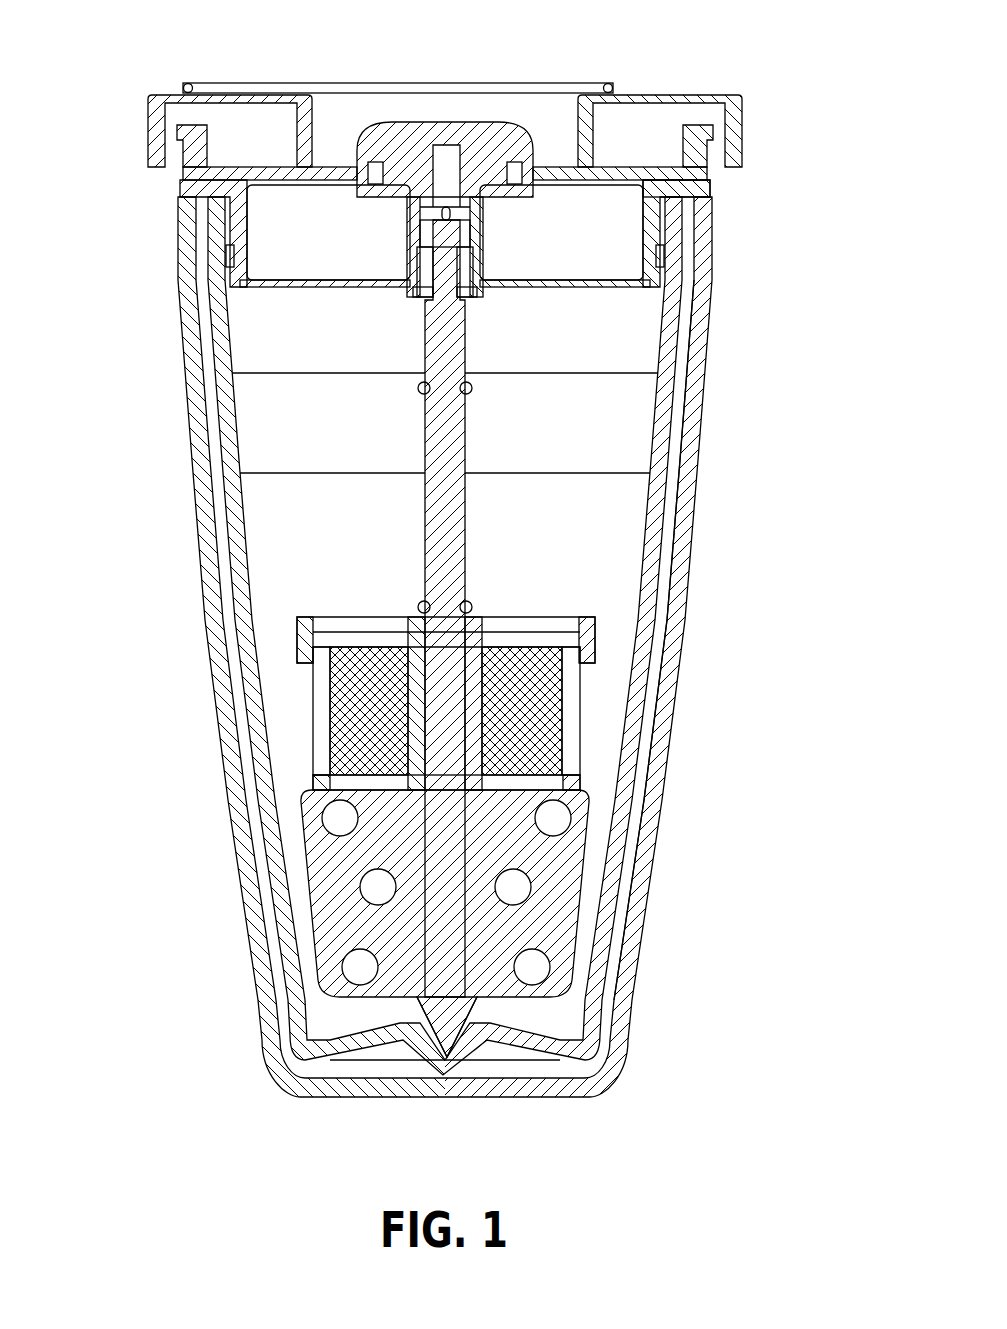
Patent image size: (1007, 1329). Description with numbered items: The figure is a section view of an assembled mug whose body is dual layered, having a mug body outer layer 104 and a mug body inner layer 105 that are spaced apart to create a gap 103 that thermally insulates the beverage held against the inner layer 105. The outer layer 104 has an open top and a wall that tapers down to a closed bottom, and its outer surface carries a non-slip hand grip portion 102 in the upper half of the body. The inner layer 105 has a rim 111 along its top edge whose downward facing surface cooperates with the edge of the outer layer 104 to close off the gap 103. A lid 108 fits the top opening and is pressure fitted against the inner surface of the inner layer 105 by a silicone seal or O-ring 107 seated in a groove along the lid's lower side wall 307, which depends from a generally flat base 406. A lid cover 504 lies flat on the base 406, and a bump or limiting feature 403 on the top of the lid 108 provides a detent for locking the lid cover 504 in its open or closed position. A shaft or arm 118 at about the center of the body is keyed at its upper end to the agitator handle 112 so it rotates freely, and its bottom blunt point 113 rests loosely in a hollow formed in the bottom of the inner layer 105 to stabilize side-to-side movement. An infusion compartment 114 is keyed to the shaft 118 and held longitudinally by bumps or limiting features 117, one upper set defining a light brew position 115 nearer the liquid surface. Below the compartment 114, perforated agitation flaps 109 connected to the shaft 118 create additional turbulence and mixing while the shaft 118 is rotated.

The non-slip hand grip portion 102 is at (587, 437).
The gap 103 is at (688, 428).
The mug body outer layer 104 is at (692, 520).
The mug body inner layer 105 is at (670, 360).
The silicone seal or O-ring 107 is at (230, 254).
The lid 108 is at (182, 138).
The agitation elements or flaps 109 is at (543, 924).
The rim 111 is at (690, 195).
The agitator handle 112 is at (410, 135).
The bottom blunt point 113 is at (448, 1025).
The infusion compartment 114 is at (580, 718).
The light brew position 115 is at (420, 390).
The bumps or limiting features 117 is at (420, 607).
The shaft or arm 118 is at (455, 537).
The lower side wall 307 is at (663, 262).
The bump or limiting feature 403 is at (662, 152).
The base 406 is at (617, 170).
The lid cover 504 is at (647, 97).